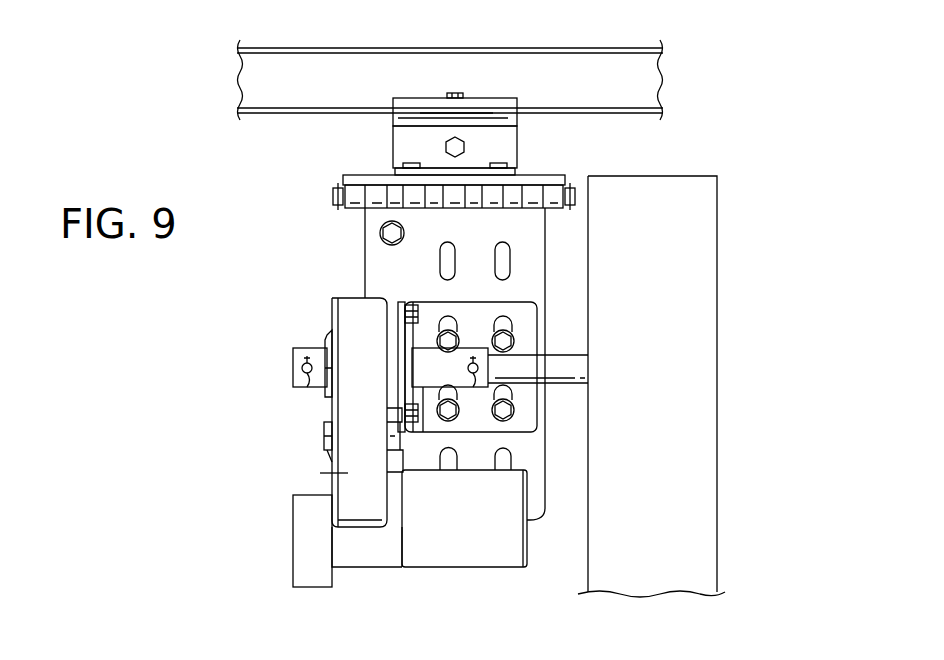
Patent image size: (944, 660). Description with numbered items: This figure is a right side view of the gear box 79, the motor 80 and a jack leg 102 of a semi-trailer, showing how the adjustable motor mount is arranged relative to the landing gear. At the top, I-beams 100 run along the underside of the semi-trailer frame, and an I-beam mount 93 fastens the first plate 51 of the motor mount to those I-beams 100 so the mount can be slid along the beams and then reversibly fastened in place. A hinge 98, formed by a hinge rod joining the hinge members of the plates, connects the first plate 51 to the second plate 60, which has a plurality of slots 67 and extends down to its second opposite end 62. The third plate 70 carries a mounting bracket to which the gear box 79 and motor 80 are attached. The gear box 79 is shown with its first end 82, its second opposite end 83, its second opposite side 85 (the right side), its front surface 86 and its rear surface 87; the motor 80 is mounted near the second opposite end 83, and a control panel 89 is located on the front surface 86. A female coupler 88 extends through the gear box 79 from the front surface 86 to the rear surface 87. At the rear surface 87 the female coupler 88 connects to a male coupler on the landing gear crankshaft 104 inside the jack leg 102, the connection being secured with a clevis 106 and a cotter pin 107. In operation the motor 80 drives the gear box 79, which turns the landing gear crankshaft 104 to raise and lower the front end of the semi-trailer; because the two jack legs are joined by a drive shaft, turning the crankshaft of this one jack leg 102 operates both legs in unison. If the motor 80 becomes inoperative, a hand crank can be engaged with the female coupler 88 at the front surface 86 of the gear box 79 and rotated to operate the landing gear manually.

The I-beams 100 is at (570, 60).
The I-beam mount 93 is at (512, 153).
The first plate 51 is at (366, 175).
The hinge 98 is at (352, 195).
The second plate 60 is at (527, 300).
The third plate 70 is at (430, 300).
The slots 67 is at (512, 397).
The second opposite end 62 is at (527, 432).
The female connecting coupler 88 is at (428, 372).
The landing gear crankshaft 104 is at (576, 365).
The clevis 106 is at (302, 365).
The cotter pin 107 is at (307, 385).
The first end 82 is at (353, 298).
The gear box 79 is at (330, 332).
The front surface 86 is at (330, 462).
The second opposite side 85 is at (348, 474).
The rear surface 87 is at (395, 453).
The control panel 89 is at (307, 565).
The second opposite end 83 is at (352, 528).
The motor 80 is at (432, 562).
The jack leg 102 is at (718, 393).